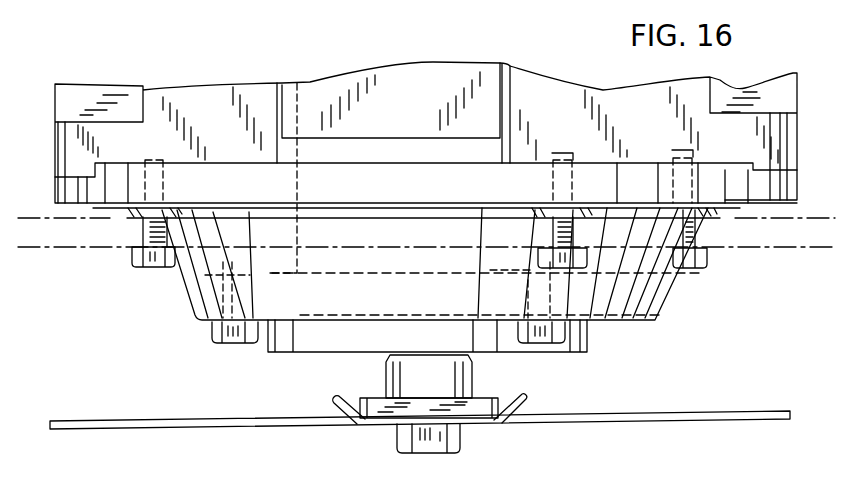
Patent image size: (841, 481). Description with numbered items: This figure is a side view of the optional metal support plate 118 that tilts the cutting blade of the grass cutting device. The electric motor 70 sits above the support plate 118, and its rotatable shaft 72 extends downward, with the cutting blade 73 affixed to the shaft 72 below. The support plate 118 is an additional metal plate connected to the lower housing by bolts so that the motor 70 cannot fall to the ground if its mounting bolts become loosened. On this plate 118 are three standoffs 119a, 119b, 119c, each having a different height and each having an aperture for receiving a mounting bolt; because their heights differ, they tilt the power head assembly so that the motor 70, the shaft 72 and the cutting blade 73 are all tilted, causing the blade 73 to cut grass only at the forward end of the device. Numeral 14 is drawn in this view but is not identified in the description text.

The spindle axis / arbor assembly 14 is at (52, 237).
The electric motor 70 is at (418, 103).
The rotatable shaft 72 is at (467, 354).
The cutting blade 73 is at (655, 422).
The support plate 118 is at (188, 295).
The standoff 119a is at (713, 218).
The standoff 119b is at (585, 212).
The standoff 119c is at (128, 210).